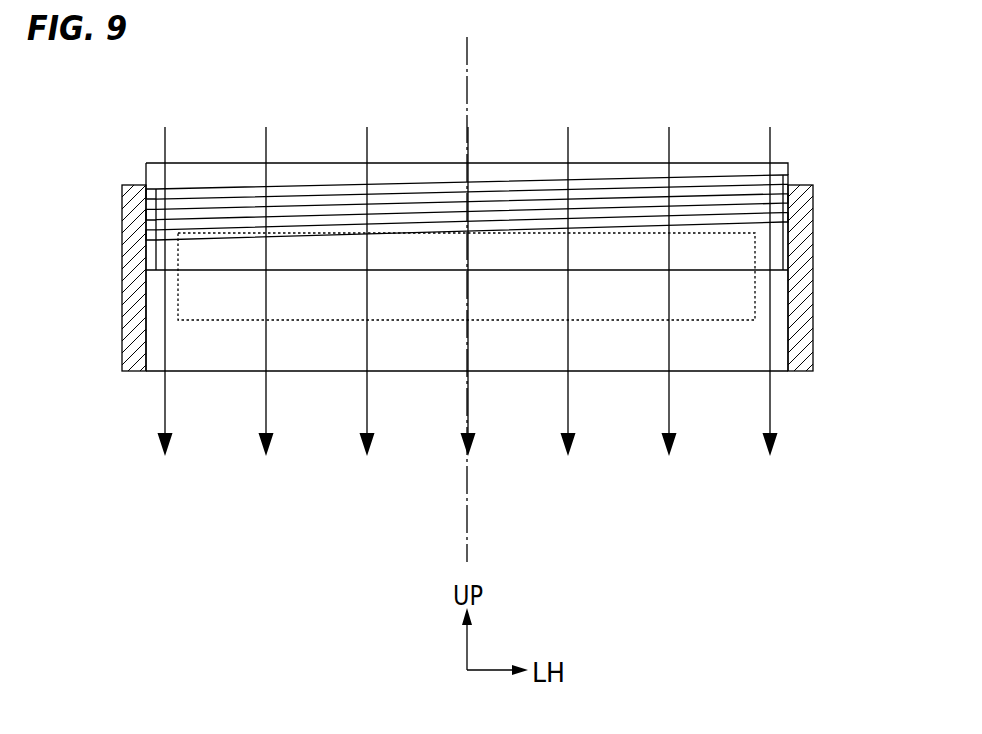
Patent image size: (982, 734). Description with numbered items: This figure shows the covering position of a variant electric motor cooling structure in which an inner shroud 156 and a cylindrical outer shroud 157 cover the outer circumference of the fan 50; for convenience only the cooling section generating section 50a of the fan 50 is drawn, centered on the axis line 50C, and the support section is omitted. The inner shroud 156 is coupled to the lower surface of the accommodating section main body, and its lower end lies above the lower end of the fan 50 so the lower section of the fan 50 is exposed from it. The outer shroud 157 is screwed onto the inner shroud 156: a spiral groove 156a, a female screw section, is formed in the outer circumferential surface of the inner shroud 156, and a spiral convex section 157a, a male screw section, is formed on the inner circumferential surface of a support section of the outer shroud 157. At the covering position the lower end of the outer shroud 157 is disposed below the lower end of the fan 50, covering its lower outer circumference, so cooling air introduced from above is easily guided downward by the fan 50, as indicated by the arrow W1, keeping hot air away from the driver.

The outer shroud 157 is at (805, 252).
The spiral convex section 157a is at (783, 203).
The inner shroud 156 is at (777, 238).
The spiral groove 156a is at (788, 203).
The fan 50 is at (497, 376).
The cooling section generating section 50a is at (722, 298).
The center line 50C is at (468, 518).
The arrow W1 is at (568, 403).